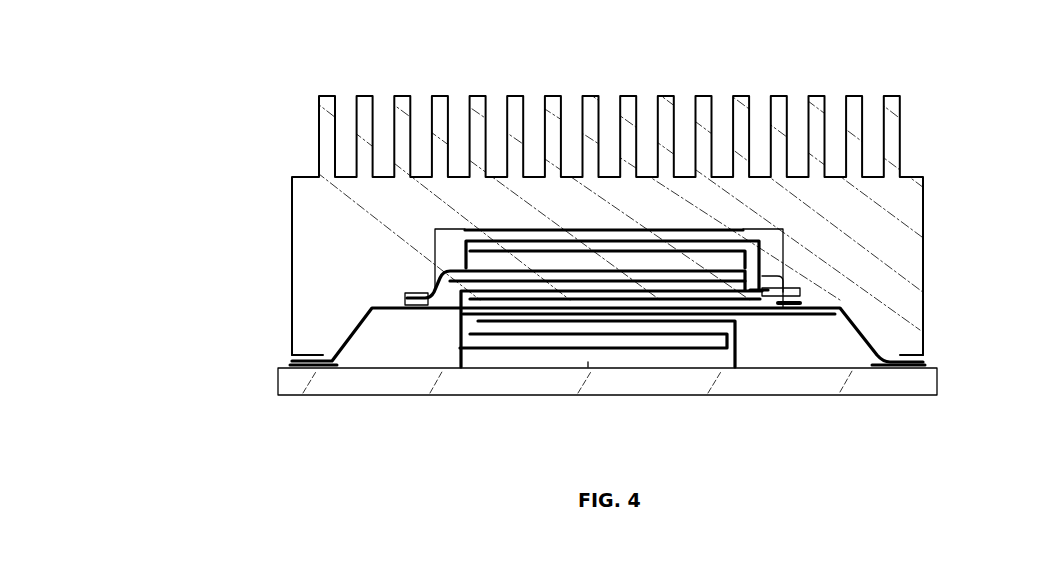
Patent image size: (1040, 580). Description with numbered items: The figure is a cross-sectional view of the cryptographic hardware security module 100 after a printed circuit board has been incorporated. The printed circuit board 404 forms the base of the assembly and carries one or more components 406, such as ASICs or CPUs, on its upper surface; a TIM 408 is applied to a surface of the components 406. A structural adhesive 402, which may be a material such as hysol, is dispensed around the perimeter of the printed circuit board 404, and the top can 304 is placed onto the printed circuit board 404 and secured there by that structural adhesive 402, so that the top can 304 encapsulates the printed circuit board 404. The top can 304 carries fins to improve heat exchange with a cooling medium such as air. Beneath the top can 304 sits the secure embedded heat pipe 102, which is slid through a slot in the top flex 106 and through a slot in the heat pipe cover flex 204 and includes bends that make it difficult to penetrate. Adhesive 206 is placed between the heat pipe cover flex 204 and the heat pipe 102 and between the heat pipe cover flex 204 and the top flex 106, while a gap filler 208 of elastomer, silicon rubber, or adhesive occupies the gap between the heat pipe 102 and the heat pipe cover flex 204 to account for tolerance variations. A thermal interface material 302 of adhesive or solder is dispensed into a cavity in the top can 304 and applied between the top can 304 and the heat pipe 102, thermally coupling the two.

The cryptographic hardware security module 100 is at (192, 46).
The top can 304 is at (295, 182).
The thermal interface material 302 is at (475, 233).
The gap filler 208 is at (477, 262).
The adhesive 206 is at (452, 280).
The heat pipe cover flex 204 is at (784, 287).
The top flex 106 is at (298, 360).
The structural adhesive 402 is at (292, 366).
The printed circuit board 404 is at (285, 391).
The heat pipe 102 is at (462, 352).
The components 406 is at (588, 362).
The TIM 408 is at (660, 348).